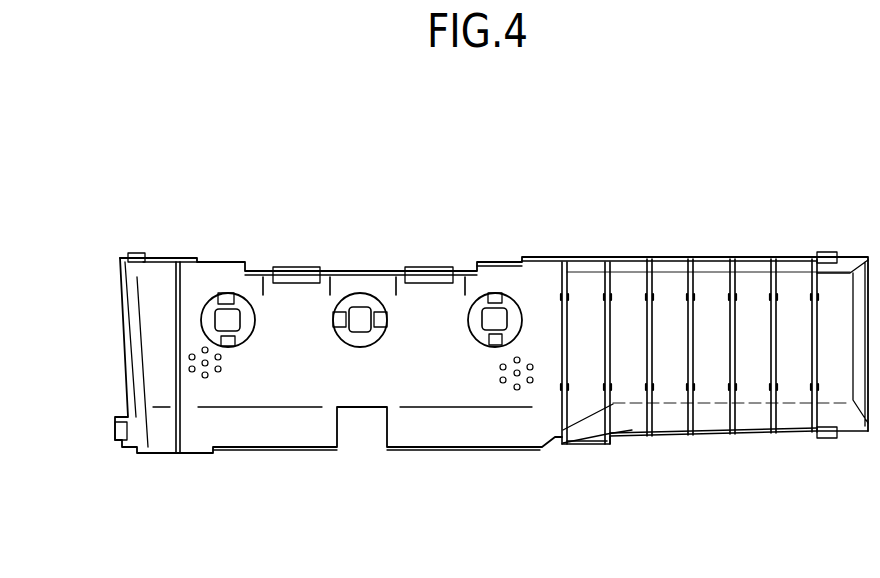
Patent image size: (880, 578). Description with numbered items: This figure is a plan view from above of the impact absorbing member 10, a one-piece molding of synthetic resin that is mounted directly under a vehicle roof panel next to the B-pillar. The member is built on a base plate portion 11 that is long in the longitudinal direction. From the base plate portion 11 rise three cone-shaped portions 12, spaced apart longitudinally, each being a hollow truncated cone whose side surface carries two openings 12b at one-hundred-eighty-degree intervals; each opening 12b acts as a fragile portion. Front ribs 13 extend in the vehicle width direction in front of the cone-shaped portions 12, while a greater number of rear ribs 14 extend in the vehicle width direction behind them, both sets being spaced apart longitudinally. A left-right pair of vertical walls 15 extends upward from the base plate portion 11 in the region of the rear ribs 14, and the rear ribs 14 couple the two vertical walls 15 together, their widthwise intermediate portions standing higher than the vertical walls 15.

The impact absorbing member 10 is at (713, 167).
The base plate portion 11 is at (447, 390).
The cone-shaped portion 12 is at (247, 320).
The opening 12b is at (225, 293).
The front rib 13 is at (122, 350).
The rear rib 14 is at (610, 355).
The vertical wall 15 is at (713, 255).